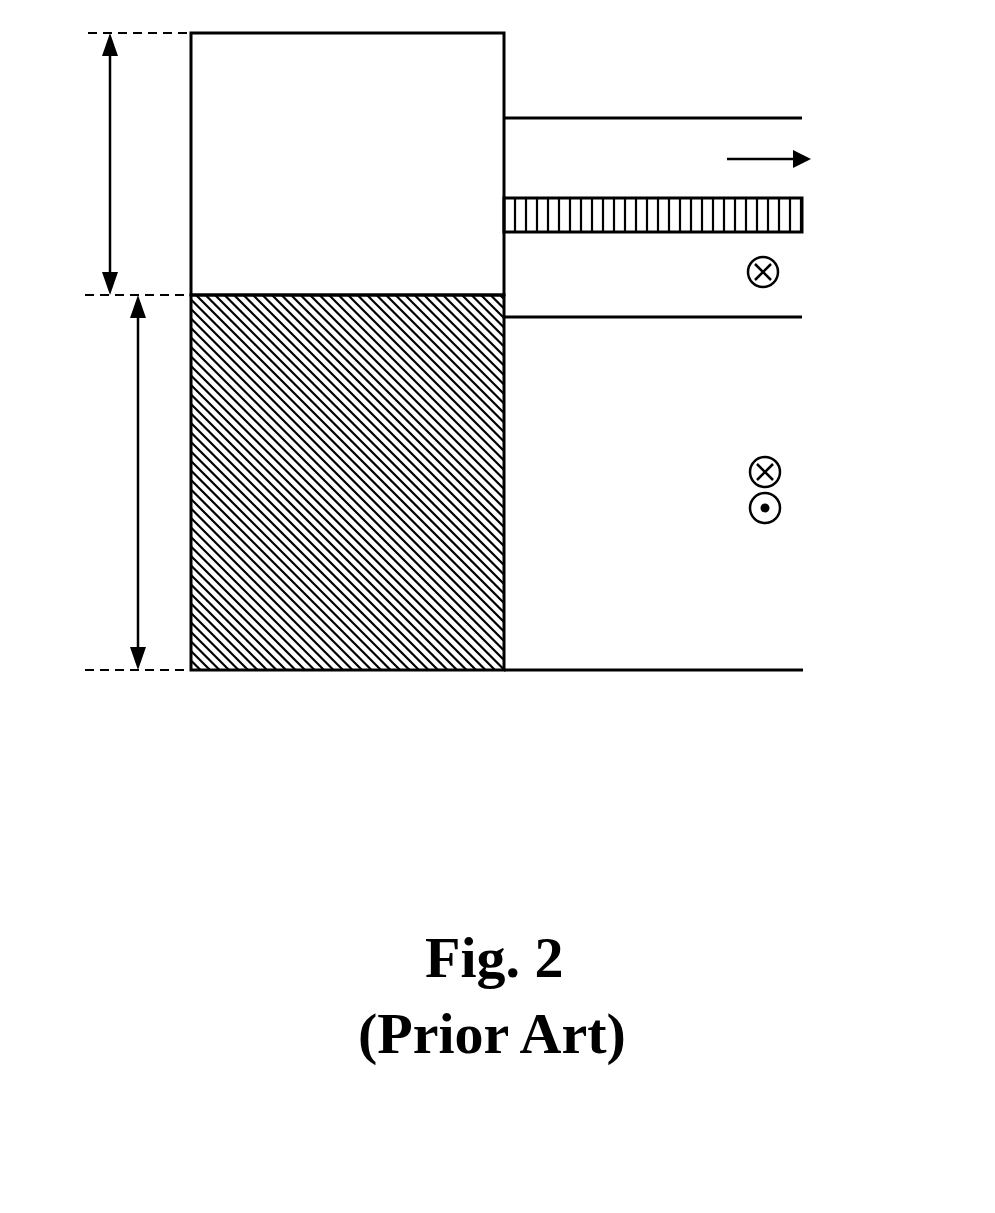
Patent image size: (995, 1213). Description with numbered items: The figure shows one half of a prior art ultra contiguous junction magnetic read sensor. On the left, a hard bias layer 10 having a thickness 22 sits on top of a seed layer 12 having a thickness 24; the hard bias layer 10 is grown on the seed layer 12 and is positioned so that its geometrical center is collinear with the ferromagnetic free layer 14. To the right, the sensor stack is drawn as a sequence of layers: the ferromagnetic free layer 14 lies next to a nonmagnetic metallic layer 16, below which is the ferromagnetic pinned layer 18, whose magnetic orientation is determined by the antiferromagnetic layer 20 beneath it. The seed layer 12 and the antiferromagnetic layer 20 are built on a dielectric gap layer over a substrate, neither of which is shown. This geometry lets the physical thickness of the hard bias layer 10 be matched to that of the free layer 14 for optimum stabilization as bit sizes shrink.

The hard bias layer 10 is at (347, 164).
The seed layer 12 is at (358, 615).
The ferromagnetic free layer 14 is at (657, 145).
The nonmagnetic metallic layer 16 is at (795, 216).
The ferromagnetic pinned layer 18 is at (653, 287).
The antiferromagnetic layer 20 is at (653, 563).
The thickness of hard bias layer 22 is at (108, 168).
The thickness of seed layer 24 is at (137, 463).